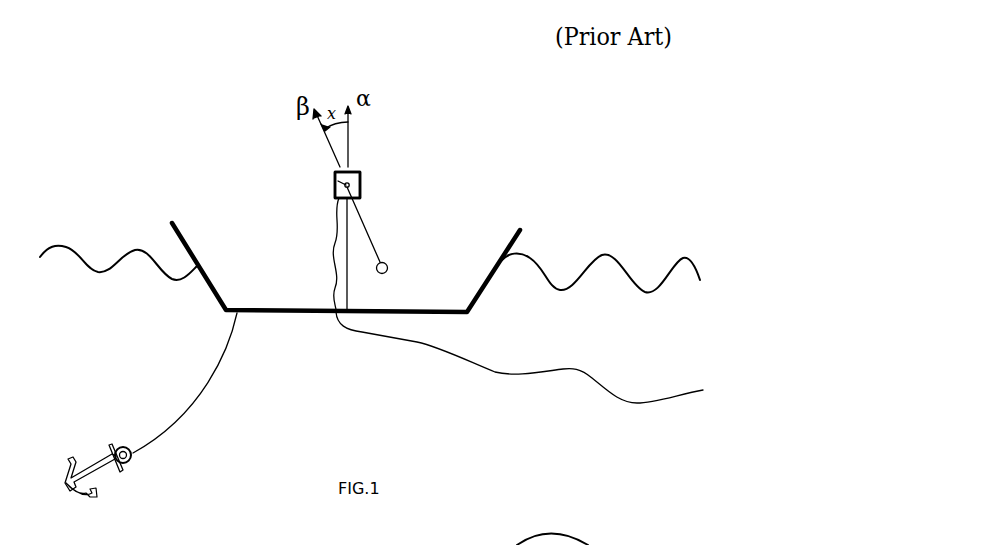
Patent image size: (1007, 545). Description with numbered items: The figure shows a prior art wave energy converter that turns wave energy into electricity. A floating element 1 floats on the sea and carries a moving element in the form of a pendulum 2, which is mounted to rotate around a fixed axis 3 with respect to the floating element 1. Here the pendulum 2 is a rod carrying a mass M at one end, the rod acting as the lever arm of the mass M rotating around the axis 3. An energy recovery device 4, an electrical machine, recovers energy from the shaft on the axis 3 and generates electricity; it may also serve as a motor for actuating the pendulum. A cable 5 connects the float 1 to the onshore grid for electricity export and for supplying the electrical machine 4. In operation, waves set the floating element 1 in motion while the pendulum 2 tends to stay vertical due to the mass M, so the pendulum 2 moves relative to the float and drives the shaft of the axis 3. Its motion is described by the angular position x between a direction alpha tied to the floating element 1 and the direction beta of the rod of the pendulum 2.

The floating element 1 is at (472, 305).
The pendulum 2 is at (376, 233).
The fixed axis 3 is at (334, 186).
The energy recovery device 4 is at (361, 187).
The cable 5 is at (548, 370).
The mass M is at (388, 263).